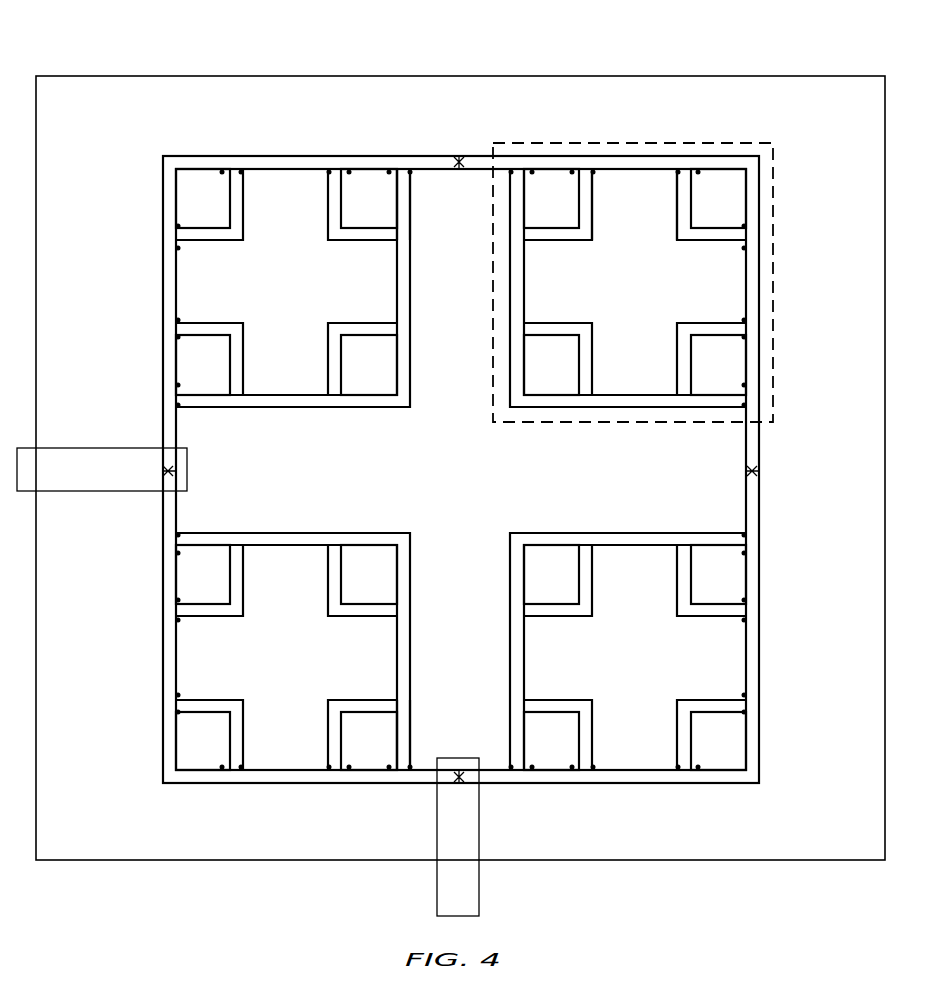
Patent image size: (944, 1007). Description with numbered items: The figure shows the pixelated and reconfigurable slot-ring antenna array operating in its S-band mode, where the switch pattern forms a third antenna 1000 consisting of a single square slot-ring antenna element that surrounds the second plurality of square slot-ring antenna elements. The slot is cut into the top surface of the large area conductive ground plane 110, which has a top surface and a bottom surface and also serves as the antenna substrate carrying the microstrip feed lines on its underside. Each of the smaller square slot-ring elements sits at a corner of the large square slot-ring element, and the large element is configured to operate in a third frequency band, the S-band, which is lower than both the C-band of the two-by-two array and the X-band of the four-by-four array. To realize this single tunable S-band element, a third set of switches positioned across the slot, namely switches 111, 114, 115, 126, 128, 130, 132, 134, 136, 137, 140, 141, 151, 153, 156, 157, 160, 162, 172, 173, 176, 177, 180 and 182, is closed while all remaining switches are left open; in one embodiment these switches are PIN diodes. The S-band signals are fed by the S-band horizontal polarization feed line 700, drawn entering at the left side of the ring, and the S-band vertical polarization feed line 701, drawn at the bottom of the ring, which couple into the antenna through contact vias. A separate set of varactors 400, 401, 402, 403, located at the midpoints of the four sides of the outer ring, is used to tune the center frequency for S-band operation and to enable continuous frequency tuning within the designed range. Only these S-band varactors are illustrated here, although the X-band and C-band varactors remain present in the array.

The third antenna 1000 is at (190, 28).
The conductive ground plane 110 is at (355, 75).
The switch 111 is at (232, 170).
The switch 114 is at (335, 171).
The switch 115 is at (409, 175).
The switch 126 is at (176, 402).
The switch 128 is at (176, 325).
The switch 130 is at (176, 240).
The switch 132 is at (521, 170).
The switch 134 is at (592, 178).
The switch 136 is at (689, 170).
The switch 137 is at (748, 240).
The switch 140 is at (748, 325).
The switch 141 is at (748, 402).
The switch 151 is at (748, 540).
The switch 153 is at (748, 605).
The switch 156 is at (748, 705).
The switch 157 is at (690, 772).
The switch 160 is at (593, 772).
The switch 162 is at (516, 766).
The switch 172 is at (403, 772).
The switch 173 is at (333, 766).
The switch 176 is at (230, 773).
The switch 177 is at (176, 705).
The switch 180 is at (176, 605).
The switch 182 is at (176, 540).
The S-band varactor 400 is at (458, 156).
The S-band varactor 401 is at (756, 471).
The S-band varactor 402 is at (459, 785).
The S-band varactor 403 is at (173, 471).
The S-band horizontal polarization feed line 700 is at (98, 482).
The S-band vertical polarization feed line 701 is at (473, 894).